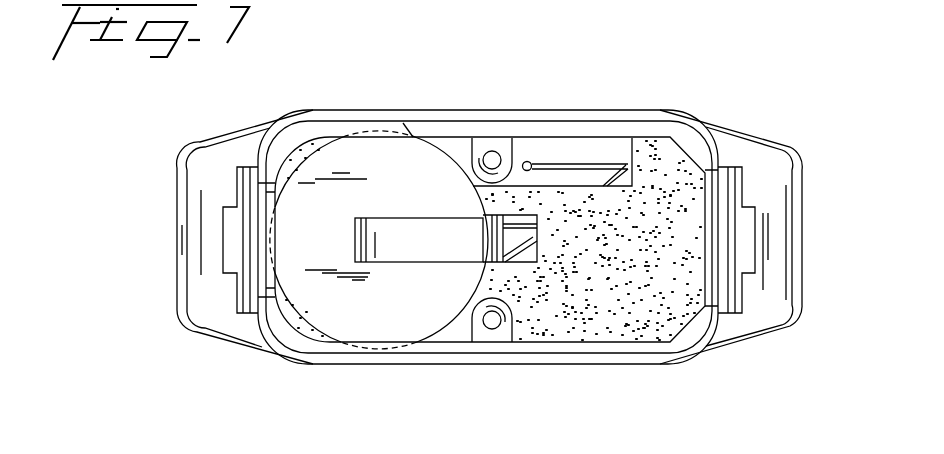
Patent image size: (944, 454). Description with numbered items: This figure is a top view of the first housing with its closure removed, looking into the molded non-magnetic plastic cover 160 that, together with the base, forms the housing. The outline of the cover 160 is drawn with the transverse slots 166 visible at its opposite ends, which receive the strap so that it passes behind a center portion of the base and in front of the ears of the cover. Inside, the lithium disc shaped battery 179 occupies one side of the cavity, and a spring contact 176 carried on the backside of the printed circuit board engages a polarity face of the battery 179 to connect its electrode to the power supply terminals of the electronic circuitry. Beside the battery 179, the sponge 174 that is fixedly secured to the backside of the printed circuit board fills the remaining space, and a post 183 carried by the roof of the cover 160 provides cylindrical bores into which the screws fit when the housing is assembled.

The cover 160 is at (777, 253).
The transverse slots 166 is at (231, 230).
The sponge 174 is at (660, 315).
The spring contact 176 is at (432, 222).
The disc shaped battery 179 is at (387, 140).
The post 183 is at (515, 150).